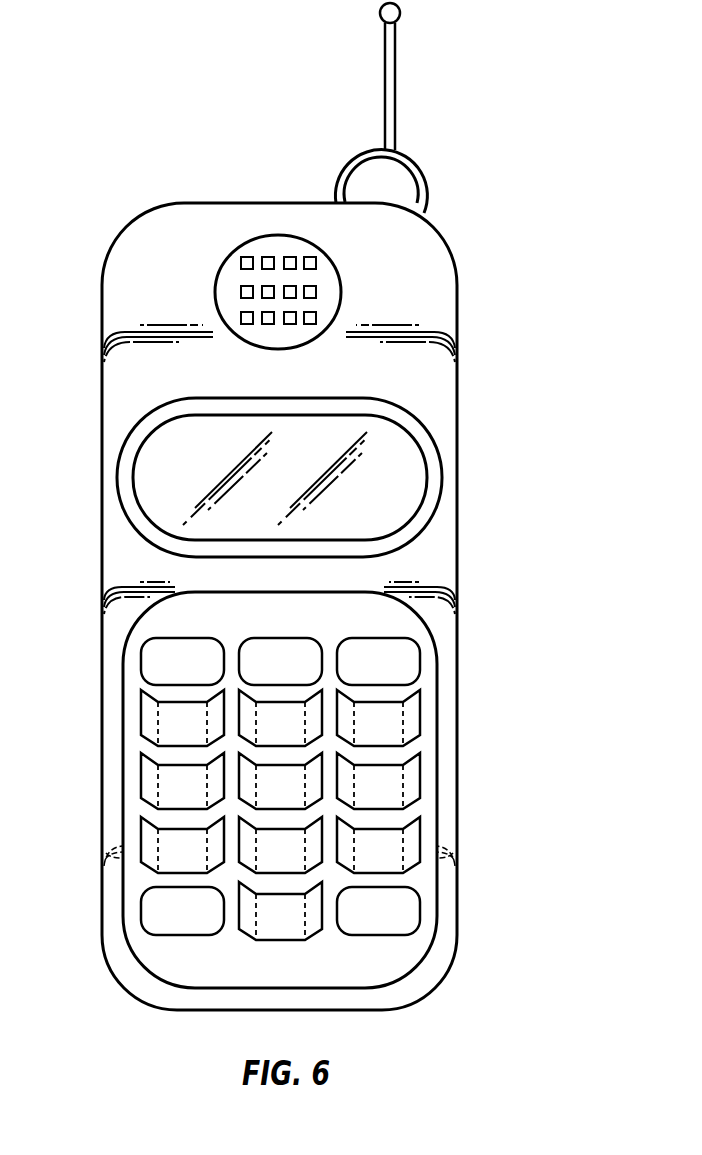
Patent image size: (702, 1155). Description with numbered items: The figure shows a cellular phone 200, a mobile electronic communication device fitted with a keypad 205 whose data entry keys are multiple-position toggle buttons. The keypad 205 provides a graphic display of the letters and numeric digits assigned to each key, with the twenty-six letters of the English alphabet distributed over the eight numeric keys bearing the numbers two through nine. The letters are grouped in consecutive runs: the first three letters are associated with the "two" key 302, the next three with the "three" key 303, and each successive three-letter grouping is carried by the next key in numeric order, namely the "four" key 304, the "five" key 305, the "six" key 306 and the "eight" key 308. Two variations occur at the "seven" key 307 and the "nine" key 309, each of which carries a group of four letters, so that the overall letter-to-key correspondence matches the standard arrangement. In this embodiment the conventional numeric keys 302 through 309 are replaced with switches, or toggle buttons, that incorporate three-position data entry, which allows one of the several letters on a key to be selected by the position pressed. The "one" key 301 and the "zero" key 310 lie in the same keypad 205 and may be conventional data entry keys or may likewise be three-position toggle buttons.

The cellular phone 200 is at (508, 155).
The keypad 205 is at (438, 673).
The "1" key 301 is at (142, 713).
The "2" key 302 is at (280, 700).
The "3" key 303 is at (419, 712).
The "4" key 304 is at (142, 777).
The "5" key 305 is at (238, 775).
The "6" key 306 is at (419, 777).
The "7" key 307 is at (141, 840).
The "8" key 308 is at (238, 840).
The "9" key 309 is at (419, 840).
The "0" key 310 is at (280, 940).